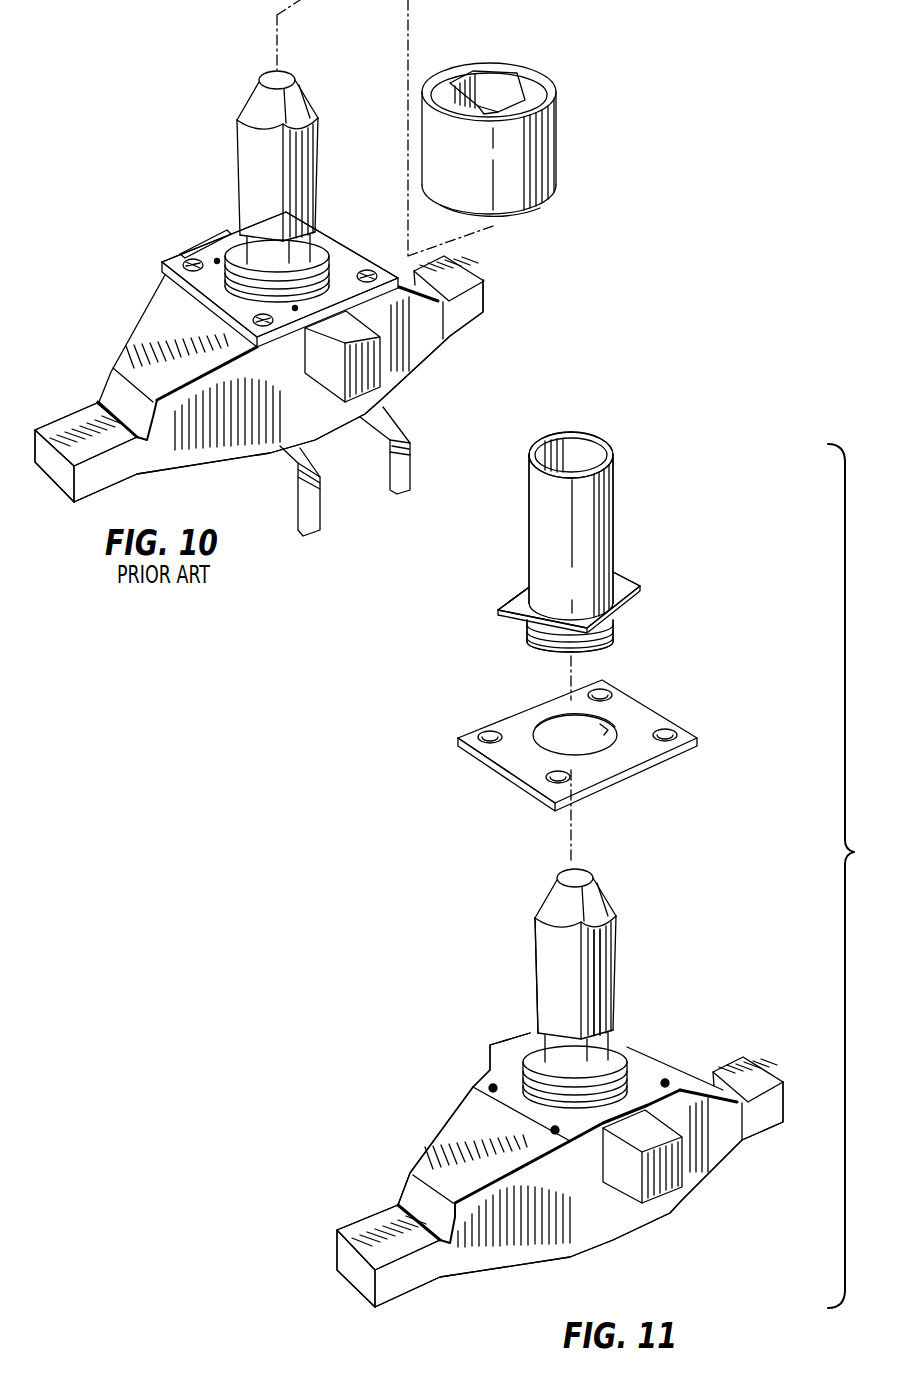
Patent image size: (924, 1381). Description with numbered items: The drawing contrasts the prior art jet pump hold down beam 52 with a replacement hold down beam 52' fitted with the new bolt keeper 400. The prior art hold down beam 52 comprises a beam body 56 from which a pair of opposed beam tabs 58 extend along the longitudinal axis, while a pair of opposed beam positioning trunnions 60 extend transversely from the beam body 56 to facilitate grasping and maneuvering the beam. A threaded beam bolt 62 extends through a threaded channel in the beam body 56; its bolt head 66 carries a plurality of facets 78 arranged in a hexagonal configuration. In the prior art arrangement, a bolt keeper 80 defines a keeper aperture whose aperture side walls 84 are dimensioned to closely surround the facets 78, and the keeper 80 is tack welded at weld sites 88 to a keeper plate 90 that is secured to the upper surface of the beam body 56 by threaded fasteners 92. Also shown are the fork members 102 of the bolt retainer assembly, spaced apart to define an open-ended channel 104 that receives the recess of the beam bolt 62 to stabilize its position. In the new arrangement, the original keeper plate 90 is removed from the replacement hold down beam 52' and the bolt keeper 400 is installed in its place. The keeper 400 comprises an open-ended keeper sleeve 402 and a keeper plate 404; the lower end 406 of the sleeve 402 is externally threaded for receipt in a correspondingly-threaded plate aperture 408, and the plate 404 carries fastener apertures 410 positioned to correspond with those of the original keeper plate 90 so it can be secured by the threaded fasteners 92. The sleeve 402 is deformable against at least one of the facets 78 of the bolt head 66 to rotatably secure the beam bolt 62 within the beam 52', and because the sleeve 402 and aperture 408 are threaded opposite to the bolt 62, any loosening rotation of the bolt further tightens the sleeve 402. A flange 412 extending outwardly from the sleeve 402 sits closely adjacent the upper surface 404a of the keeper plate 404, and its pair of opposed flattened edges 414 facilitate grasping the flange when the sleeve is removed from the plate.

In FIG. 10, the jet pump hold down beam 52 is at (259, 312).
In FIG. 10, the threaded beam bolt 62 is at (247, 96).
In FIG. 11, the threaded beam bolt 62 is at (614, 901).
In FIG. 10, the aperture side walls 84 is at (501, 89).
In FIG. 10, the bolt keeper 80 is at (552, 129).
In FIG. 10, the weld sites 88 is at (516, 219).
In FIG. 10, the threaded fasteners 92 is at (183, 254).
In FIG. 10, the keeper plate 90 is at (226, 296).
In FIG. 10, the beam tabs 58 is at (77, 420).
In FIG. 10, the beam body 56 is at (279, 379).
In FIG. 10, the beam positioning trunnions 60 is at (375, 356).
In FIG. 11, the beam positioning trunnions 60 is at (673, 1153).
In FIG. 10, the fork members 102 is at (414, 443).
In FIG. 10, the open-ended channel 104 is at (352, 492).
In FIG. 11, the bolt keeper 400 is at (636, 468).
In FIG. 11, the keeper sleeve 402 is at (537, 530).
In FIG. 11, the flange 412 is at (620, 584).
In FIG. 11, the flattened edges 414 is at (520, 593).
In FIG. 11, the lower end of sleeve 406 is at (615, 618).
In FIG. 11, the plate aperture 408 is at (608, 727).
In FIG. 11, the fastener apertures 410 is at (486, 730).
In FIG. 11, the upper surface of keeper plate 404a is at (526, 773).
In FIG. 11, the keeper plate 404 is at (635, 755).
In FIG. 11, the bolt head 66 is at (540, 940).
In FIG. 11, the facets 78 is at (606, 961).
In FIG. 11, the replacement hold down beam 52' is at (560, 1153).